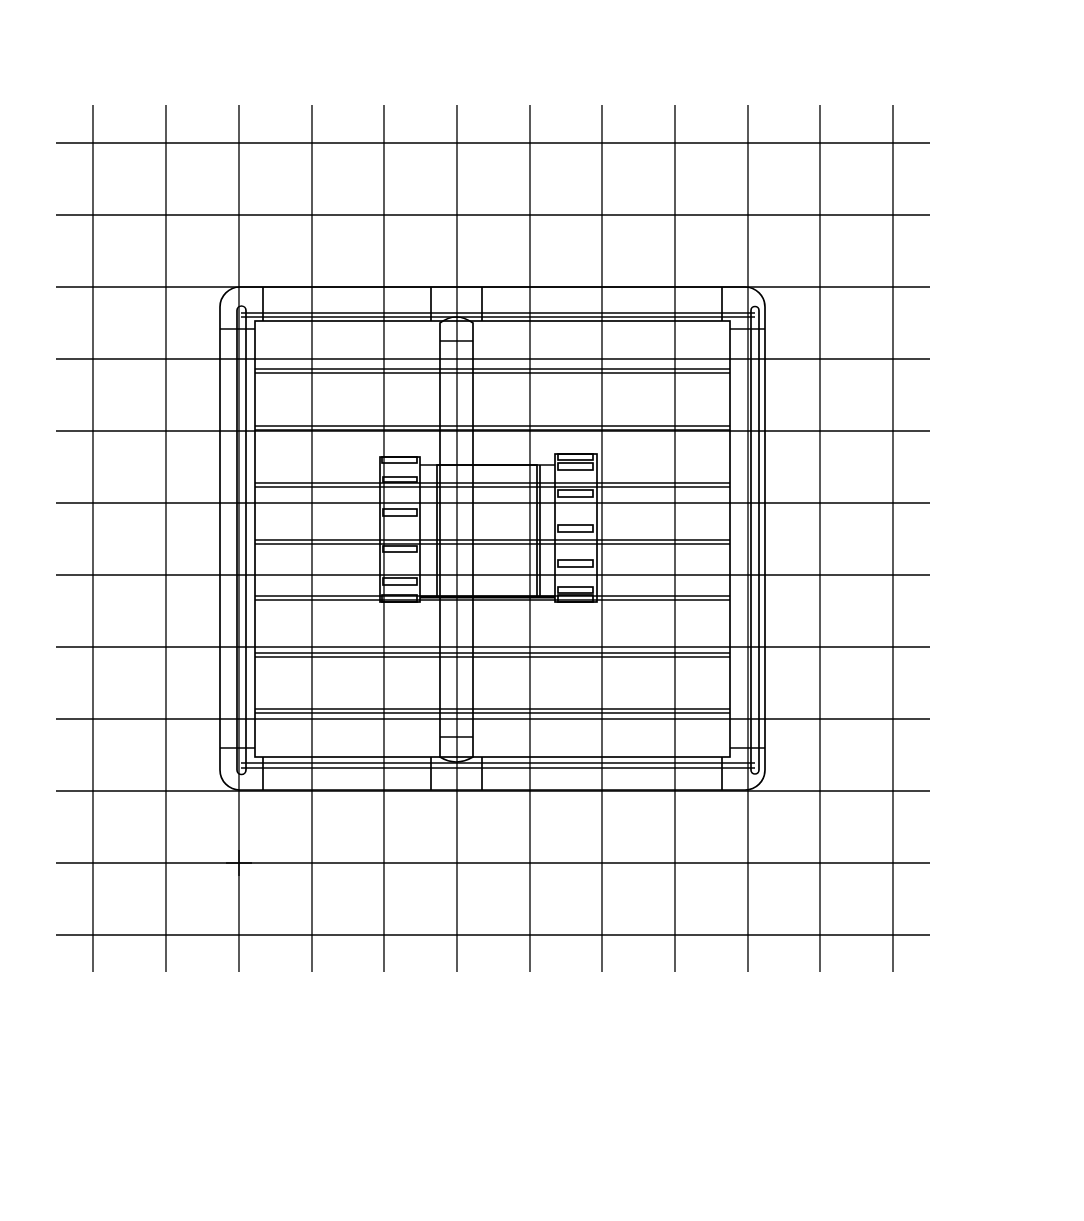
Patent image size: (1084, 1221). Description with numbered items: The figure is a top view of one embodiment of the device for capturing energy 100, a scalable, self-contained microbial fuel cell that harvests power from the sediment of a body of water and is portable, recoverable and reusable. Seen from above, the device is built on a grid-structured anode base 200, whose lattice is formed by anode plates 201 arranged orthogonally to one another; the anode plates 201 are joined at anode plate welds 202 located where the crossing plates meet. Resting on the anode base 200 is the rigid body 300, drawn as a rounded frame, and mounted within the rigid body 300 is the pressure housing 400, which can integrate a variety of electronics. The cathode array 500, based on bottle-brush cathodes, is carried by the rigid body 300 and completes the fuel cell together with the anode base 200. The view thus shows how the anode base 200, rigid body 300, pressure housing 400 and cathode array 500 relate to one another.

The device for capturing energy 100 is at (134, 71).
The anode base 200 is at (93, 972).
The anode plates 201 is at (206, 936).
The anode plate welds 202 is at (239, 863).
The rigid body 300 is at (743, 785).
The pressure housing 400 is at (490, 508).
The cathode array 500 is at (748, 407).